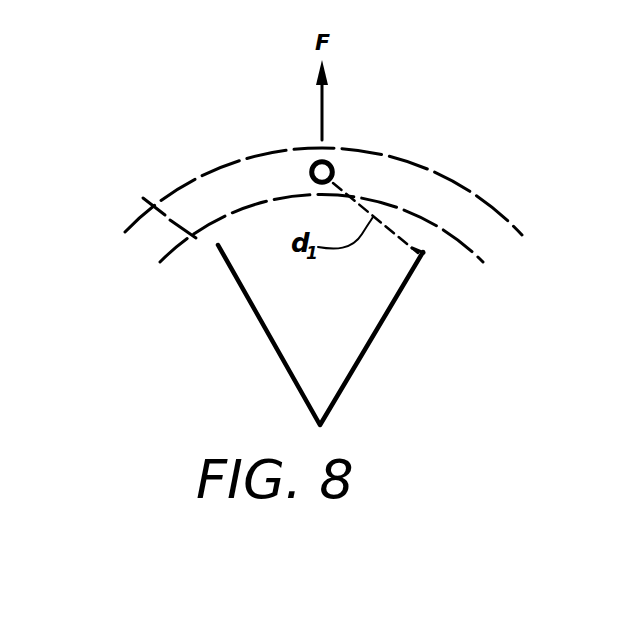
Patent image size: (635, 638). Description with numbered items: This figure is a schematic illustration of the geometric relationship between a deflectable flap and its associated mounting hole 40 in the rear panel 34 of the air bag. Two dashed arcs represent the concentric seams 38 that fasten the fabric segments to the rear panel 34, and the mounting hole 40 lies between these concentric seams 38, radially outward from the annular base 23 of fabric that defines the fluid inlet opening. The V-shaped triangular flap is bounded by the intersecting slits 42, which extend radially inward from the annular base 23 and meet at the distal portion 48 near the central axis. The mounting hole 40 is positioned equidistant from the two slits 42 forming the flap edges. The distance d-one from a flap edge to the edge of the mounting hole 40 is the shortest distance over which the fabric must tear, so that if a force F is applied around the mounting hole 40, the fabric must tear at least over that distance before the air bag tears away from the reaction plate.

The annular base 23 is at (247, 231).
The rear panel 34 is at (458, 286).
The concentric seams 38 is at (178, 190).
The mounting hole 40 is at (327, 168).
The intersecting slits 42 is at (272, 348).
The distal portion 48 is at (331, 387).